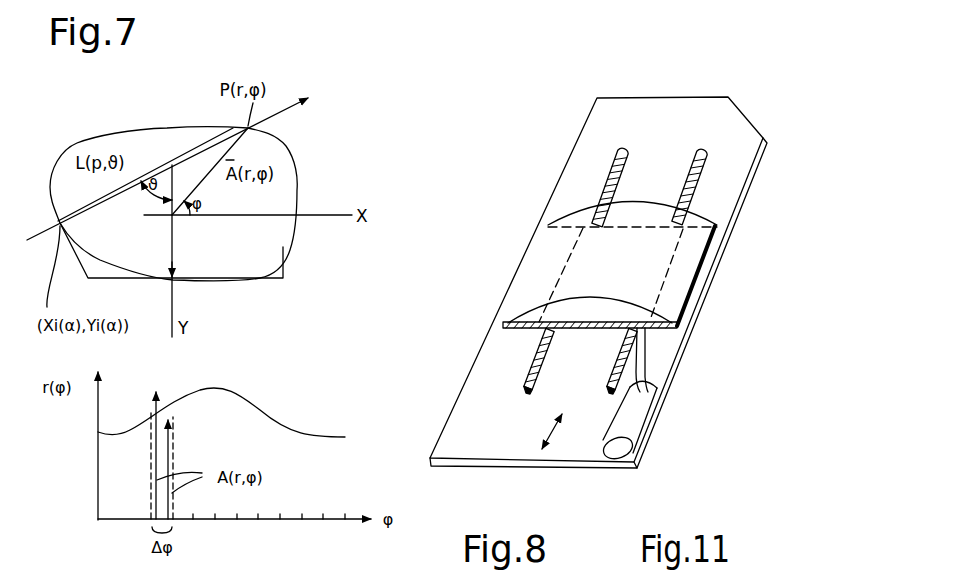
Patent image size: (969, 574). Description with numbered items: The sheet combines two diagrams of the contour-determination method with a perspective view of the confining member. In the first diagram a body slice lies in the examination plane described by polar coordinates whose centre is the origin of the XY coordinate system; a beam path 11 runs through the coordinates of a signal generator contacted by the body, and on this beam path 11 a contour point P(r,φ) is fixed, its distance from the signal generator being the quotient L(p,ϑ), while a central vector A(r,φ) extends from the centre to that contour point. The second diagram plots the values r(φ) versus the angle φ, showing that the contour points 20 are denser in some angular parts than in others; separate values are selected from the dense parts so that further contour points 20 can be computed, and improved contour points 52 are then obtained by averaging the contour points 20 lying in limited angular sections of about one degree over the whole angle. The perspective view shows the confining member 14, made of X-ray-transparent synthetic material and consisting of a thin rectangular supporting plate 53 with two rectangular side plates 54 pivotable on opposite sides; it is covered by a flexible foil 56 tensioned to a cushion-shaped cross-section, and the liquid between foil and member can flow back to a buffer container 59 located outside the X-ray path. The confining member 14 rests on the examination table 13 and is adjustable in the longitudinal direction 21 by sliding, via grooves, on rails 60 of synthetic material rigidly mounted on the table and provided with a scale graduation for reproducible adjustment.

In FIG. 7, the beam path 11 is at (312, 99).
In FIG. 7, the contour points 20 is at (160, 392).
In FIG. 7, the improved contour points 52 is at (167, 412).
In FIG. 8, the examination table 13 is at (596, 133).
In FIG. 8, the confining member 14 is at (719, 226).
In FIG. 8, the flexible foil 56 is at (640, 203).
In FIG. 8, the supporting plate 53 is at (596, 329).
In FIG. 8, the side plates 54 is at (505, 328).
In FIG. 8, the rails 60 is at (611, 384).
In FIG. 8, the buffer container 59 is at (640, 420).
In FIG. 8, the longitudinal direction 21 is at (552, 432).